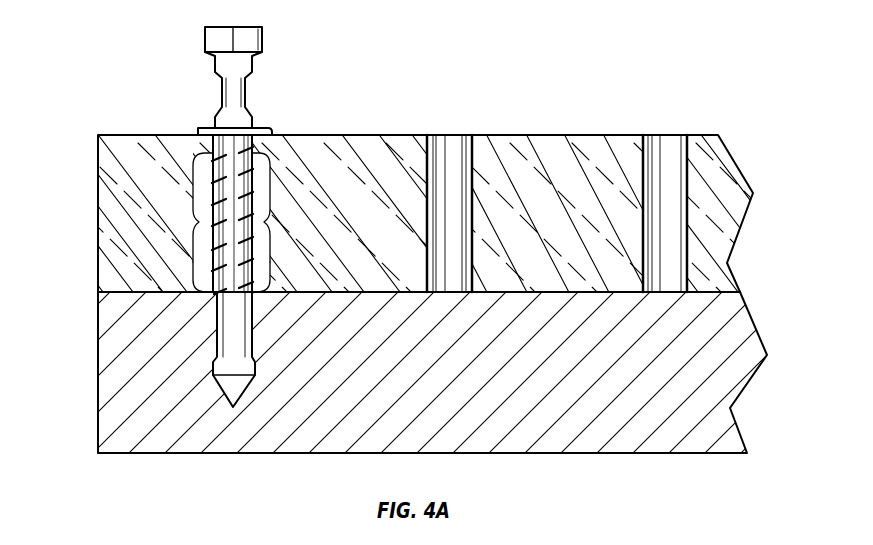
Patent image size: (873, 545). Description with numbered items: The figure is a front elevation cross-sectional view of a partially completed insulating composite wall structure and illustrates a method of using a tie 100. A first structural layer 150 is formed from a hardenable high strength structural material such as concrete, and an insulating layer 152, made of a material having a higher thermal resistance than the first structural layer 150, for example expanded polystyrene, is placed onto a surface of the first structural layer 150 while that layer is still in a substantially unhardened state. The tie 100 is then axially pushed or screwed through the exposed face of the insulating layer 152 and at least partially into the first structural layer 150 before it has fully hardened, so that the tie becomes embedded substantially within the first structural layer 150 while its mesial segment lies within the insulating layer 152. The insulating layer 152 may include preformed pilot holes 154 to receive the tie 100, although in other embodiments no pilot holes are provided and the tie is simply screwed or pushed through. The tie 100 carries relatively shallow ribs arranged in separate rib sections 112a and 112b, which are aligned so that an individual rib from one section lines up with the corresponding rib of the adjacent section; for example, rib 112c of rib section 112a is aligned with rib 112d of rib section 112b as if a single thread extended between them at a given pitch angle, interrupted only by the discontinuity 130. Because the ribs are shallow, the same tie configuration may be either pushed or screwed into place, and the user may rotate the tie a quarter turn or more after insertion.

The tie 100 is at (236, 90).
The rib section 112a is at (193, 221).
The rib section 112b is at (270, 220).
The rib 112c is at (205, 292).
The rib 112d is at (256, 289).
The discontinuity 130 is at (230, 284).
The first structural layer 150 is at (135, 362).
The insulating layer 152 is at (130, 238).
The pilot hole 154 is at (454, 167).